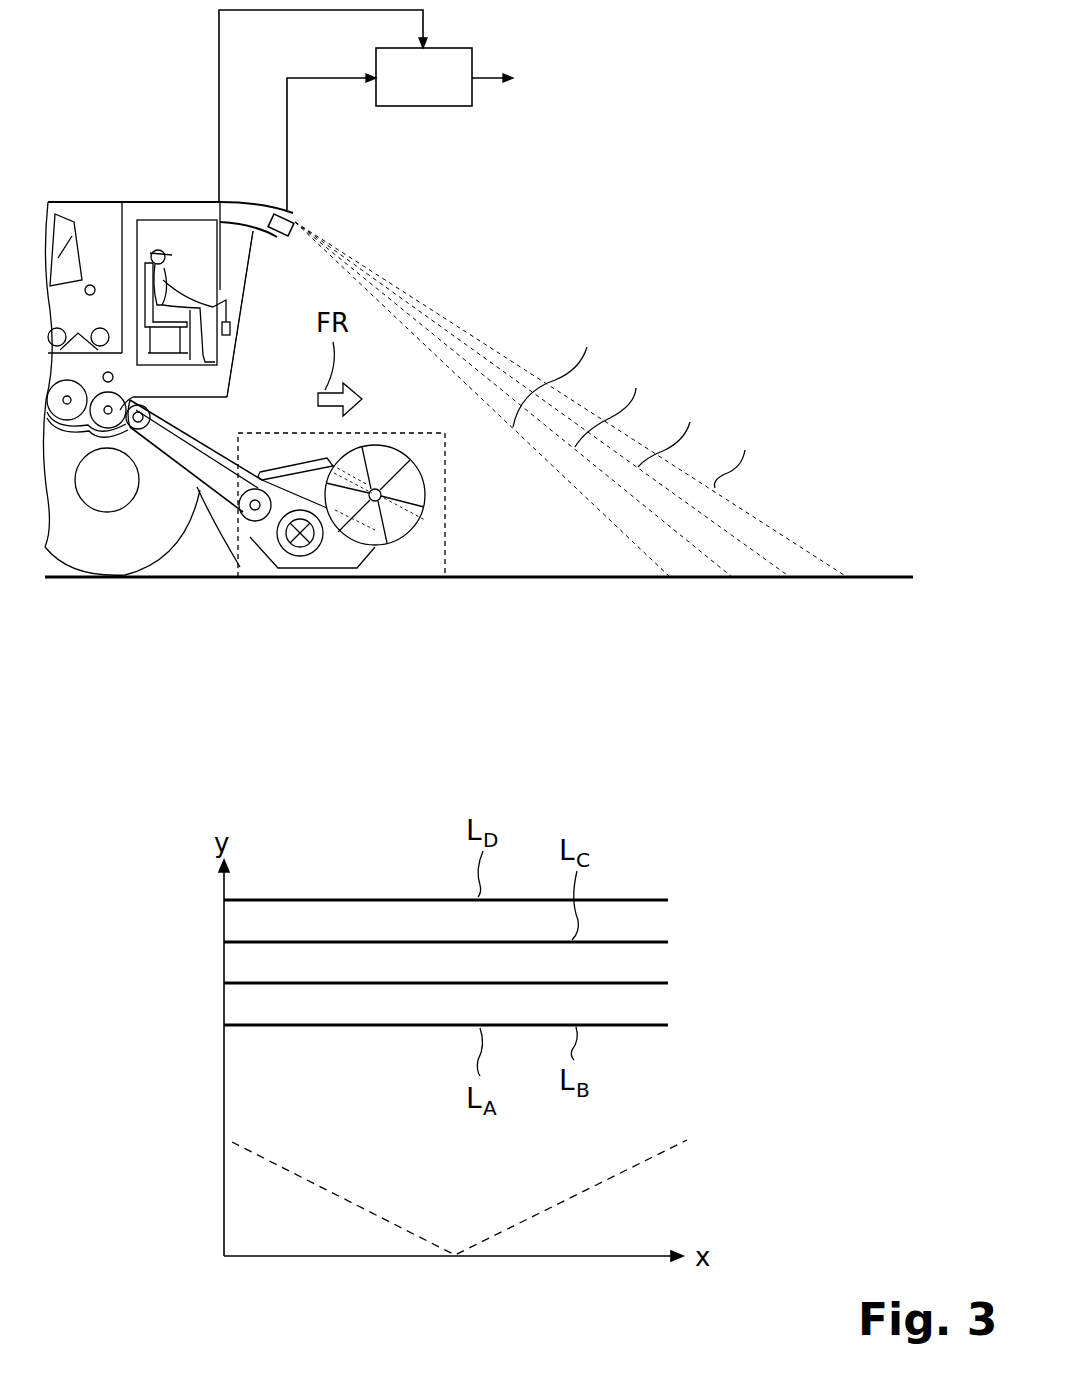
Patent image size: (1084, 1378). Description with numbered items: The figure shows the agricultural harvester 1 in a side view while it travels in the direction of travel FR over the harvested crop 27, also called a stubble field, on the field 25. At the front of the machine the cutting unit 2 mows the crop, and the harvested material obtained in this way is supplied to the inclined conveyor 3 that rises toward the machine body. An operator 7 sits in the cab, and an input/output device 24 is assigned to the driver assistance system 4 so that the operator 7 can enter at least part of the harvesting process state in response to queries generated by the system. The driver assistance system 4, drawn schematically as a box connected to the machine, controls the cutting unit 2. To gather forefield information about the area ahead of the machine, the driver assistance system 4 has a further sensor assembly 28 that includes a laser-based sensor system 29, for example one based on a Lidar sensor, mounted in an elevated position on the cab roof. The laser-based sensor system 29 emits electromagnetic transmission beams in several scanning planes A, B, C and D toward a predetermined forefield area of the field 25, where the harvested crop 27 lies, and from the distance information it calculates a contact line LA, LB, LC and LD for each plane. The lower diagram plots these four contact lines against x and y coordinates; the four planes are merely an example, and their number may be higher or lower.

The agricultural harvester 1 is at (100, 168).
The cutting unit 2 is at (267, 432).
The inclined conveyor 3 is at (212, 505).
The driver assistance system 4 is at (431, 92).
The operator 7 is at (158, 246).
The input/output device 24 is at (228, 280).
The field 25 is at (648, 243).
The harvested crop 27 is at (887, 553).
The sensor assembly 28 is at (298, 218).
The laser-based sensor system 29 is at (281, 225).